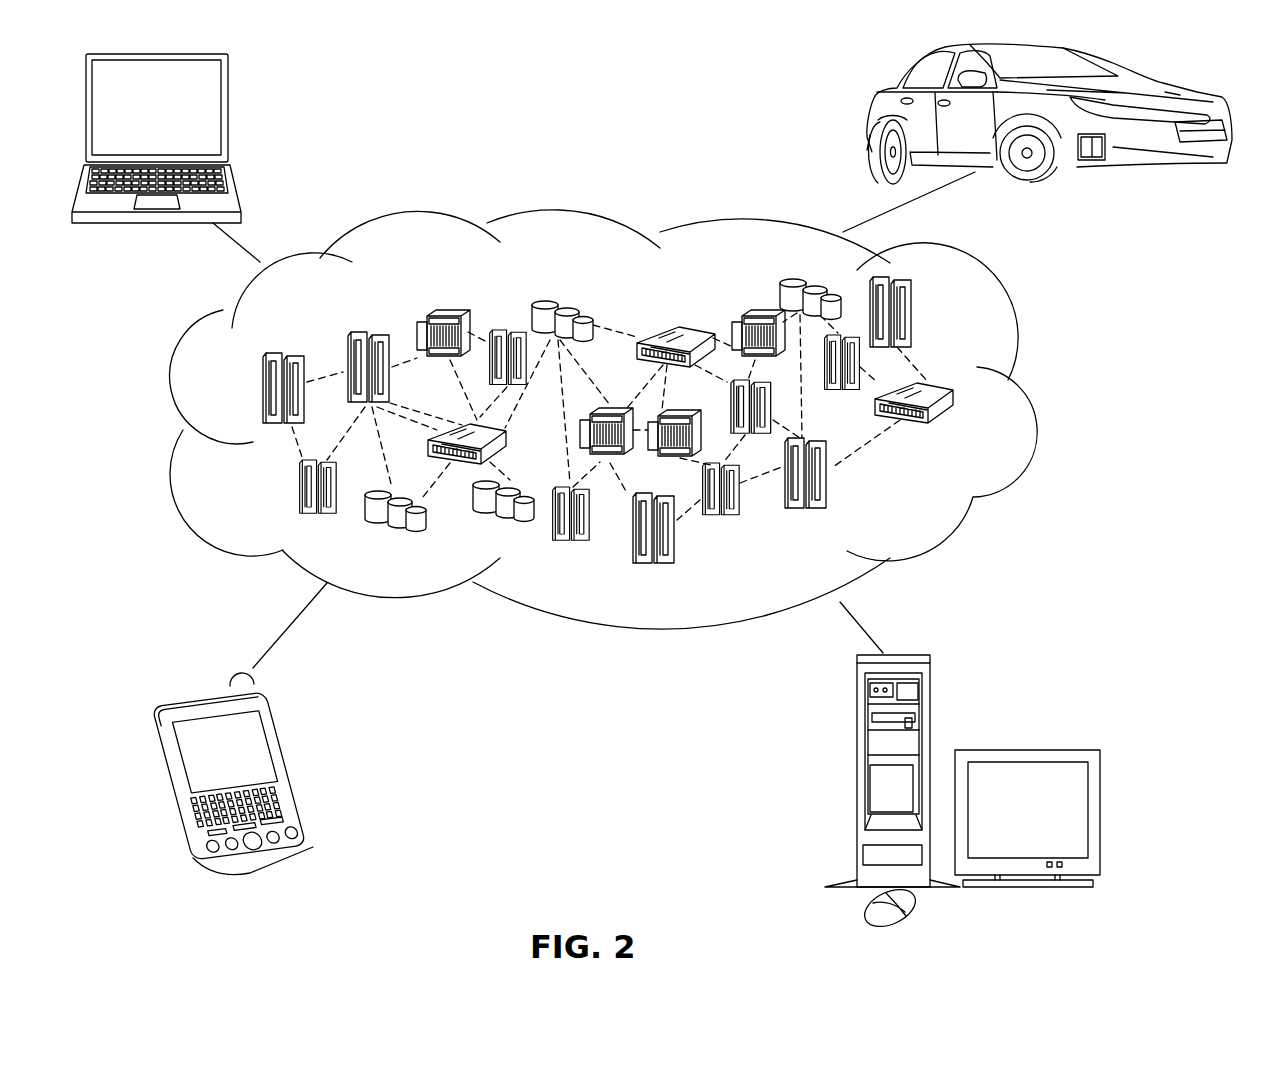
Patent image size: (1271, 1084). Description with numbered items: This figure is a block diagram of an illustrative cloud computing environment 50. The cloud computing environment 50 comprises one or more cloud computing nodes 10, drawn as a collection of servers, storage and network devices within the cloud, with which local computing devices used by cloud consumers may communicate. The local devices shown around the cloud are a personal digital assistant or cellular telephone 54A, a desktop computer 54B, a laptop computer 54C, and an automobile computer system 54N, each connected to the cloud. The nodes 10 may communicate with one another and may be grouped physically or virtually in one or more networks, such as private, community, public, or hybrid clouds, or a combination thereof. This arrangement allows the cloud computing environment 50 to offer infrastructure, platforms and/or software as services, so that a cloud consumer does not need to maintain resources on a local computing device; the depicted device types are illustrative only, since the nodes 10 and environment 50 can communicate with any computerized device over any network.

The cloud computing nodes 10 is at (633, 419).
The cloud computing environment 50 is at (1028, 398).
The personal digital assistant or cellular telephone 54A is at (283, 730).
The desktop computer 54B is at (857, 716).
The laptop computer 54C is at (228, 92).
The automobile computer system 54N is at (873, 108).